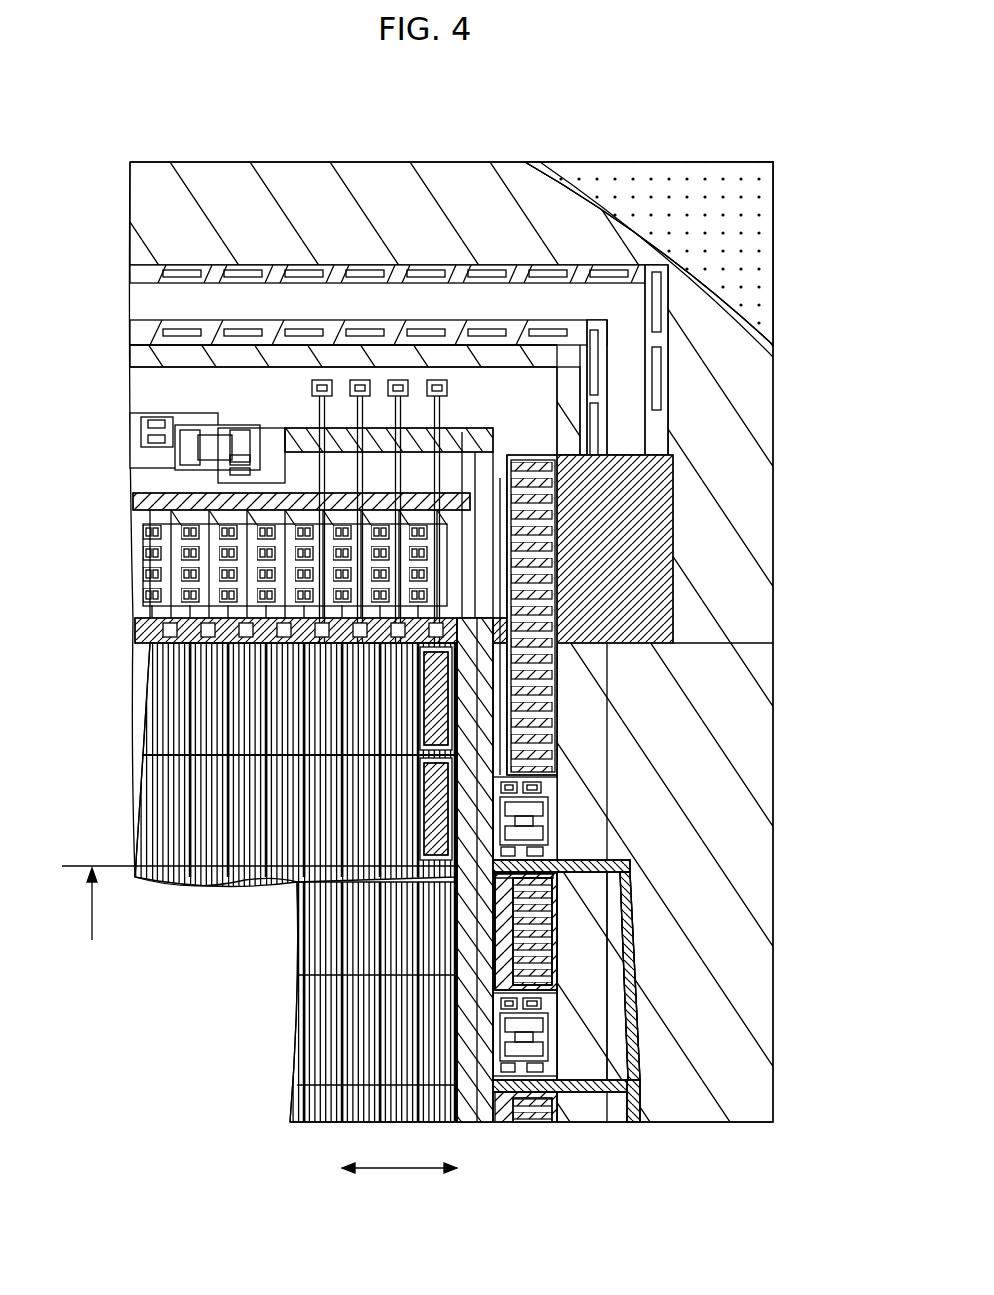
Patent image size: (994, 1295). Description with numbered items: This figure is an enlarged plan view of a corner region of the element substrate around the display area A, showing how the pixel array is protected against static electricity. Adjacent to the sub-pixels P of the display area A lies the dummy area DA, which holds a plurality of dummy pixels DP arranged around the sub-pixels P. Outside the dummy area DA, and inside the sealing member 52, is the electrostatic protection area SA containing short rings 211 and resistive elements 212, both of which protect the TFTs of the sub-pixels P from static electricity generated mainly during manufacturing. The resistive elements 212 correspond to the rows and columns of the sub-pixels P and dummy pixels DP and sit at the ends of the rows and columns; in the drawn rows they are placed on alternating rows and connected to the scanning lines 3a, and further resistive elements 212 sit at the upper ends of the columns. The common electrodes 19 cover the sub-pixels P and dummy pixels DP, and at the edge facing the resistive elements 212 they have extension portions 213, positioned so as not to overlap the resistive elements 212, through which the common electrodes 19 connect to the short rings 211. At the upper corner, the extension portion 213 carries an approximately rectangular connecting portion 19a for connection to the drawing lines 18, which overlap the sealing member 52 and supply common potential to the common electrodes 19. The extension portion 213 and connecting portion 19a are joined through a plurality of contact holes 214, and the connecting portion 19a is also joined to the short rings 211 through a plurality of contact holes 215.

The drawing line 18 is at (373, 175).
The sealing member 52 is at (665, 175).
The resistive element 212 is at (204, 524).
The contact hole 215 is at (673, 488).
The contact hole 214 is at (673, 512).
The connecting portion 19a is at (673, 563).
The common electrode 19 is at (150, 660).
The dummy pixel DP is at (150, 715).
The extension portion 213 is at (558, 722).
The scanning line 3a is at (634, 905).
The short ring 211 is at (590, 1013).
The sub-pixel P is at (292, 1010).
The display area A is at (342, 1230).
The dummy area DA is at (399, 1184).
The electrostatic protection area SA is at (608, 1230).